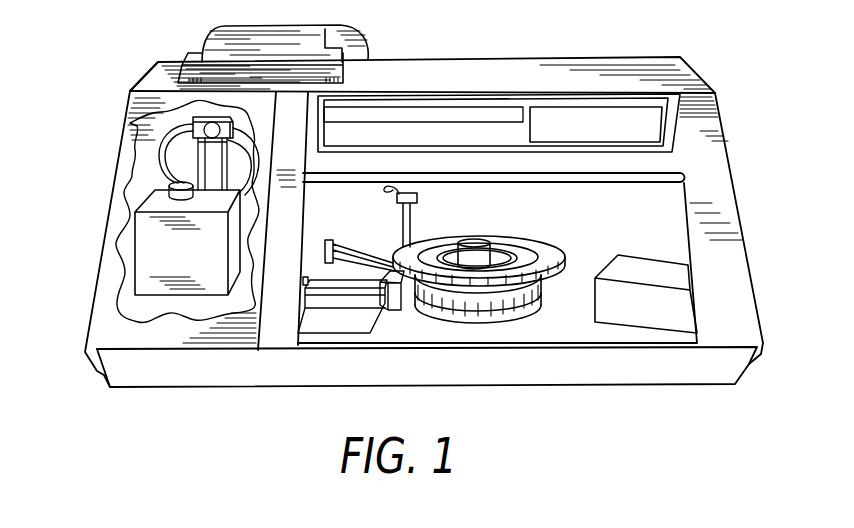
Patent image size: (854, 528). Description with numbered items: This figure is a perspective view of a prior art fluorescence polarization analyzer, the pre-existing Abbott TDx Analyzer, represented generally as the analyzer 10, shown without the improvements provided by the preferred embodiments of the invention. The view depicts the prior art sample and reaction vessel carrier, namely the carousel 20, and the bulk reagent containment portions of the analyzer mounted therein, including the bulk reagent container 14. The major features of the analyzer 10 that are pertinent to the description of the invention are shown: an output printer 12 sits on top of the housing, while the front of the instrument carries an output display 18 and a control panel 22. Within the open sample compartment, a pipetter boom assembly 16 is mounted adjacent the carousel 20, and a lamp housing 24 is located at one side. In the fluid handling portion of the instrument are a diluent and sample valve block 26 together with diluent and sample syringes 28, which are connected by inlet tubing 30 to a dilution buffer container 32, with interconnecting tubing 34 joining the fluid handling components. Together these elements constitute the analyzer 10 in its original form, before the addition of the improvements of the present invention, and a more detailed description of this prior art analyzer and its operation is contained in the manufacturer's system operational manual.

The analyzer 10 is at (101, 253).
The output printer 12 is at (363, 50).
The bulk reagent container 14 is at (343, 272).
The pipetter boom assembly 16 is at (408, 236).
The output display 18 is at (523, 91).
The carousel 20 is at (547, 256).
The control panel 22 is at (653, 127).
The lamp housing 24 is at (639, 309).
The diluent and sample valve block 26 is at (130, 123).
The diluent and sample syringes 28 is at (253, 189).
The inlet tubing 30 is at (158, 152).
The dilution buffer container 32 is at (187, 238).
The interconnecting tubing 34 is at (256, 148).